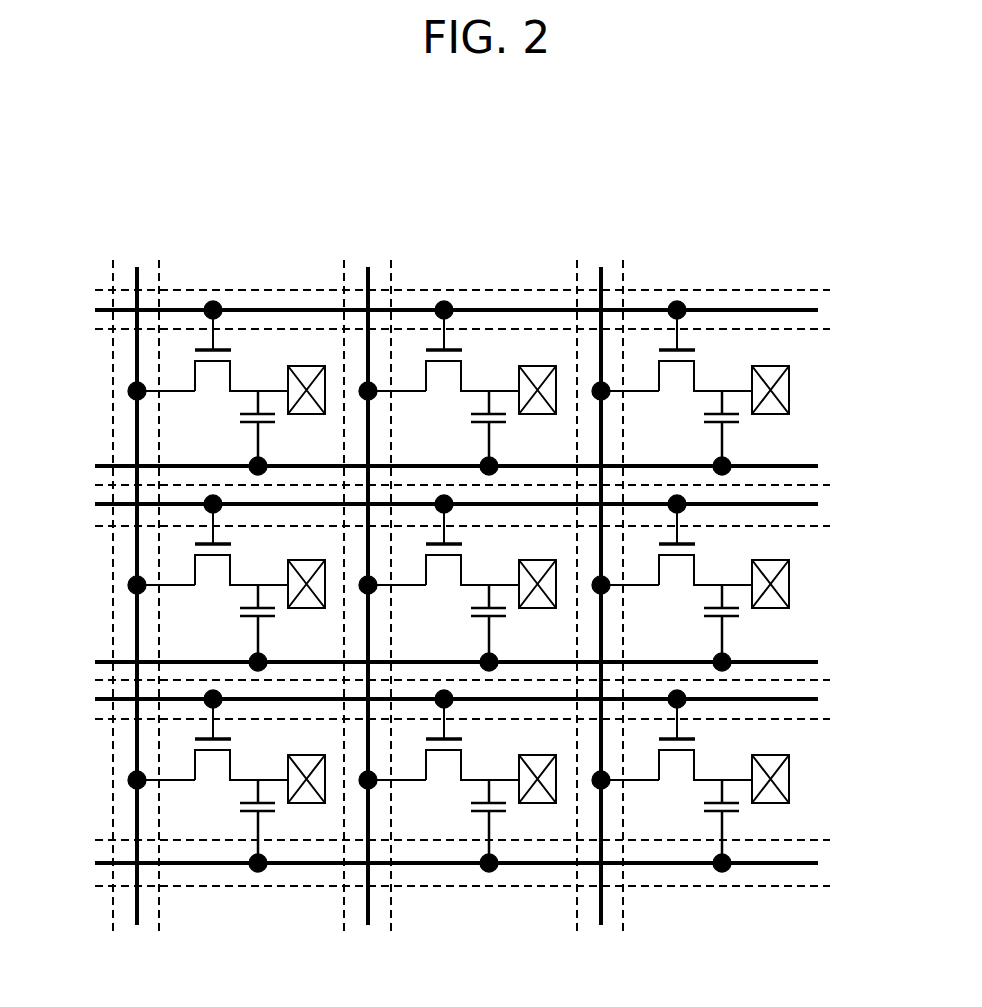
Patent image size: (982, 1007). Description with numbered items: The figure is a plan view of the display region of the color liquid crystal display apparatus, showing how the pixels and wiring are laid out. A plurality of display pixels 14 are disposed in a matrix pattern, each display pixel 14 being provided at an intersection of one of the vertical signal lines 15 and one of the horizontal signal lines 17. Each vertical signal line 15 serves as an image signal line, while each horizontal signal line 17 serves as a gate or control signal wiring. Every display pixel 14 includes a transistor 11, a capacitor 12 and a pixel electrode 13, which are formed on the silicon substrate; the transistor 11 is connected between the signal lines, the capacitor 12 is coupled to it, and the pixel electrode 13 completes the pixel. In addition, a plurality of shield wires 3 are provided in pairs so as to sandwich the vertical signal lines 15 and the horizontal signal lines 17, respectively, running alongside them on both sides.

The shield wire 3 is at (345, 260).
The transistor 11 is at (658, 376).
The capacitor 12 is at (739, 423).
The pixel electrode 13 is at (790, 400).
The display pixel 14 is at (702, 349).
The vertical signal line 15 is at (370, 267).
The horizontal signal line 17 is at (818, 310).